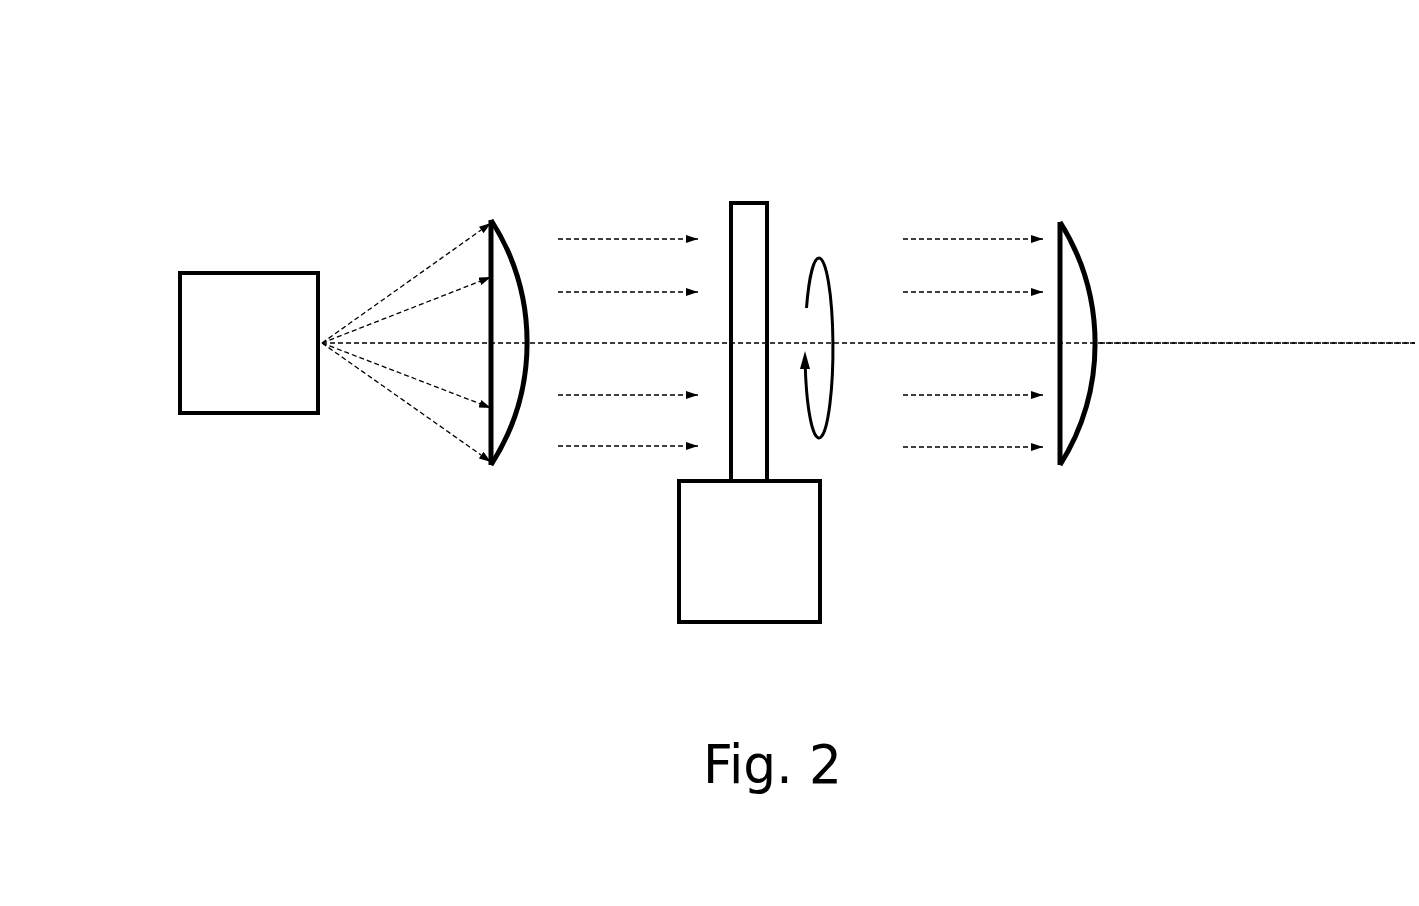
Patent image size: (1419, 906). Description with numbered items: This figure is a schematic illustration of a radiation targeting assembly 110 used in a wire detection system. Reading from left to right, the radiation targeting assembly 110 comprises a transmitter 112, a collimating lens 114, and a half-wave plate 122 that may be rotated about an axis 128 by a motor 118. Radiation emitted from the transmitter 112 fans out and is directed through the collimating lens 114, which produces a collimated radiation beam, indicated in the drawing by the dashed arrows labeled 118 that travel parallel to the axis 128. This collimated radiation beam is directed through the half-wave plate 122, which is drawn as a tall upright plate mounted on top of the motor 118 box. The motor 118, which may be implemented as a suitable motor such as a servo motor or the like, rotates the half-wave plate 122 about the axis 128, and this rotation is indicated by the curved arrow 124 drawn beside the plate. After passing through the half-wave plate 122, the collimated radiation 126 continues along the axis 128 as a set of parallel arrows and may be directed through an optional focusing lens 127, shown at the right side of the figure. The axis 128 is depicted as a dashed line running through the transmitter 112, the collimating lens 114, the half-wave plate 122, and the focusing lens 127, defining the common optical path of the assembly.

The radiation targeting assembly 110 is at (236, 95).
The transmitter 112 is at (235, 365).
The collimating lens 114 is at (491, 220).
The motor 118 is at (611, 240).
The half-wave plate 122 is at (750, 203).
The arrow 124 is at (819, 258).
The collimated radiation 126 is at (957, 240).
The focusing lens 127 is at (1058, 222).
The axis 128 is at (1227, 343).